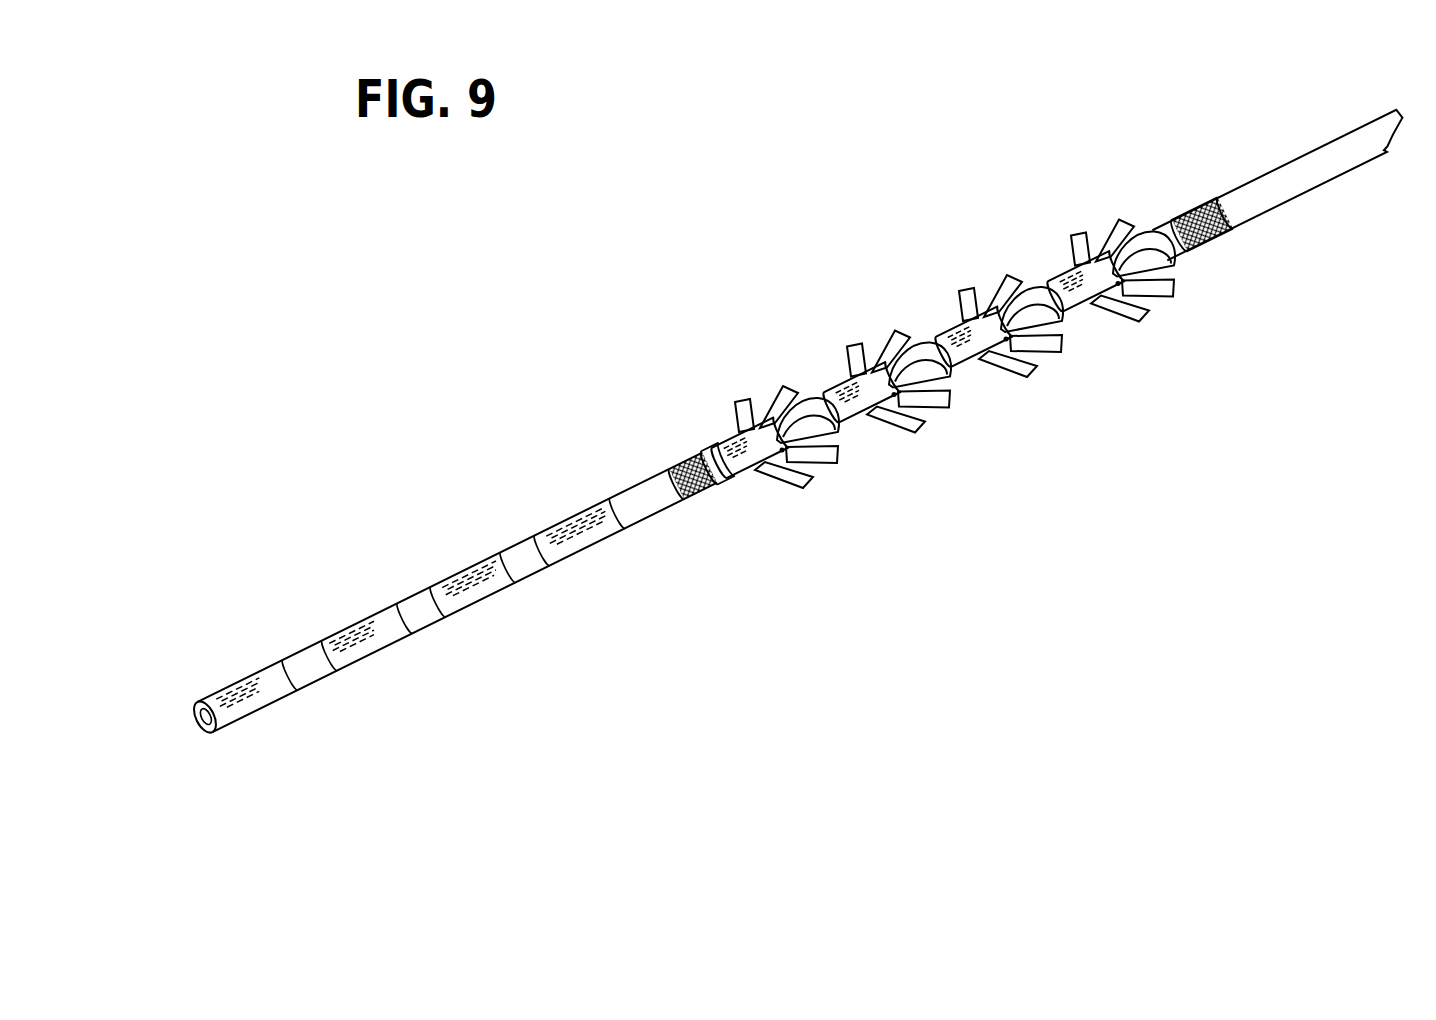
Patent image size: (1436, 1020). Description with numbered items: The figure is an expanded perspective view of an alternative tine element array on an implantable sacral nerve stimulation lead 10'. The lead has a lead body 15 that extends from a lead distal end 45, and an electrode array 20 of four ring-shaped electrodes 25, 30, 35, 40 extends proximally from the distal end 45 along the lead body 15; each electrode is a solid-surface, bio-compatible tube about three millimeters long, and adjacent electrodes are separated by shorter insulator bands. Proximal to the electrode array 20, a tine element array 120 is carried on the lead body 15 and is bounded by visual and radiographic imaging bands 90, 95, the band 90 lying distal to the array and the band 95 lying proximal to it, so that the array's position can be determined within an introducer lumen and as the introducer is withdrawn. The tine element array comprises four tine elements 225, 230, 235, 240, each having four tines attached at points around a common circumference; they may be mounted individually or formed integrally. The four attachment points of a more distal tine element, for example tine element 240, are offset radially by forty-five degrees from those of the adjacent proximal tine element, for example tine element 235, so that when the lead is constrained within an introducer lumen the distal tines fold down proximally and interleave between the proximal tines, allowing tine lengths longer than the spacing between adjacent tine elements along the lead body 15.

The lead 10' is at (511, 457).
The lead body 15 is at (1293, 195).
The electrode array 20 is at (673, 457).
The ring-shaped electrode 25 is at (247, 713).
The ring-shaped electrode 30 is at (363, 653).
The ring-shaped electrode 35 is at (465, 600).
The ring-shaped electrode 40 is at (570, 553).
The lead distal end 45 is at (205, 733).
The visual and radiographic imaging band 90 is at (700, 487).
The visual and radiographic imaging band 95 is at (1183, 213).
The tine element array 120 is at (1153, 217).
The tine element 225 is at (753, 466).
The tine element 230 is at (882, 417).
The tine element 235 is at (990, 363).
The tine element 240 is at (1100, 307).